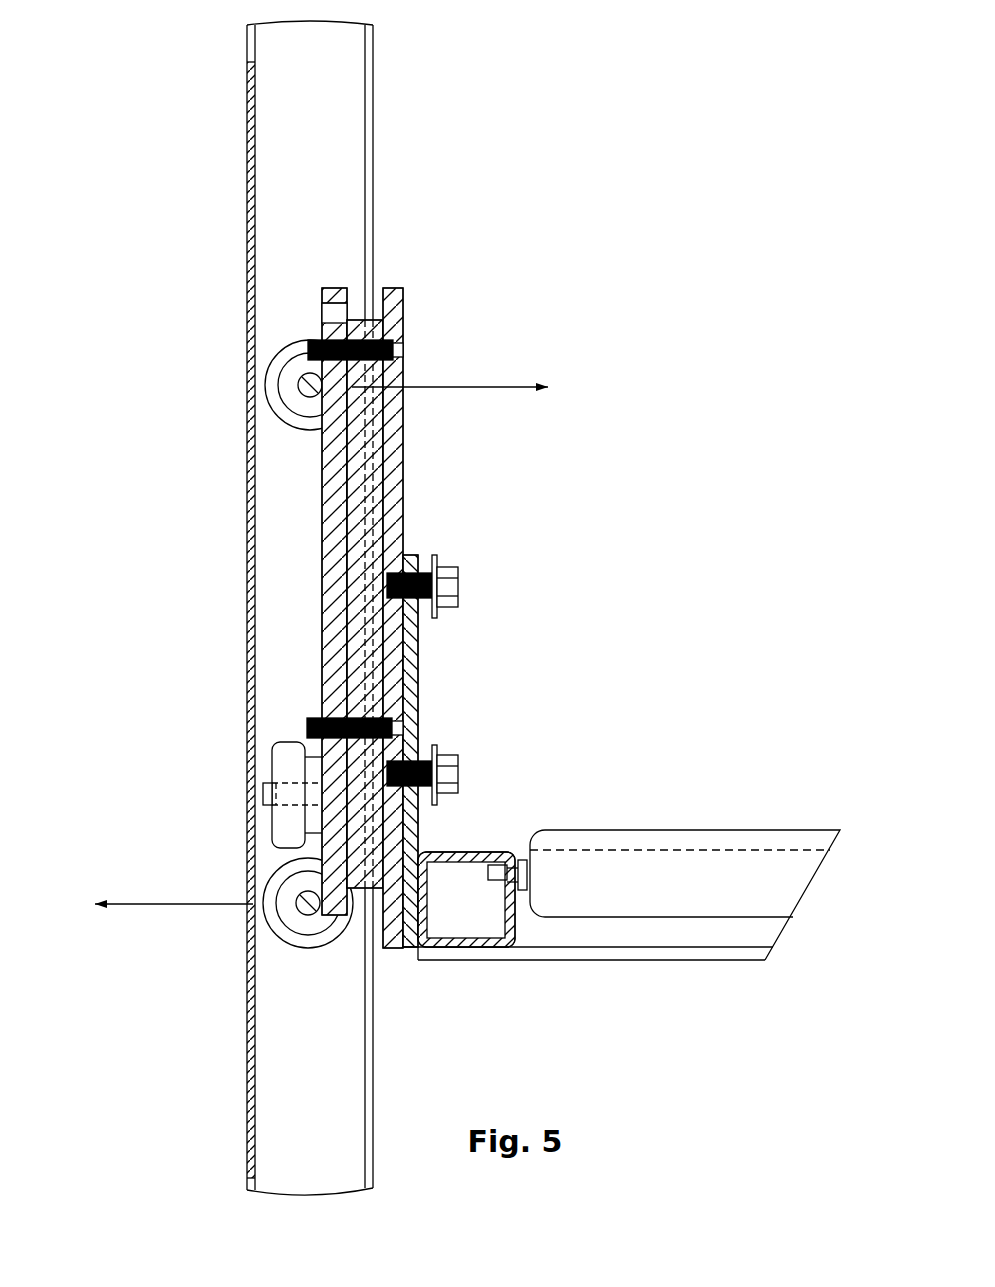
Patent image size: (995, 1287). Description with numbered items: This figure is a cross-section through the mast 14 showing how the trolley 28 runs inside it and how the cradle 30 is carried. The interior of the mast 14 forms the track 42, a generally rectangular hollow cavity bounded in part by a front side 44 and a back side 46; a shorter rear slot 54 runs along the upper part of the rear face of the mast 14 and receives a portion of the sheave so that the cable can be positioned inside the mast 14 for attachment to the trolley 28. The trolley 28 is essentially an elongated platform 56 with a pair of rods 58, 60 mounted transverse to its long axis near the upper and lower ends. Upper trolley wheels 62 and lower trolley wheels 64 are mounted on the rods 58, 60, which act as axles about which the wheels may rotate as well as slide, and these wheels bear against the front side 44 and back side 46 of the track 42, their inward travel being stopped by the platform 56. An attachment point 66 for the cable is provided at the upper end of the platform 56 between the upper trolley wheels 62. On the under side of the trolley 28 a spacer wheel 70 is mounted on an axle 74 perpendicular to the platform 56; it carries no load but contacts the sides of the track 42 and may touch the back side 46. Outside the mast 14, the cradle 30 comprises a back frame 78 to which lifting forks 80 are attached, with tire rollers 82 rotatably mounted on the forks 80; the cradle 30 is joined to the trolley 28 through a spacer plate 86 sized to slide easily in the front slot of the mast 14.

The mast 14 is at (299, 608).
The trolley 28 is at (350, 483).
The cradle 30 is at (588, 809).
The track 42 is at (333, 97).
The front side 44 is at (367, 187).
The back side 46 is at (245, 407).
The rear slot 54 is at (248, 50).
The elongated platform 56 is at (310, 562).
The rod 58 is at (297, 375).
The rod 60 is at (295, 915).
The upper trolley wheels 62 is at (229, 339).
The lower trolley wheels 64 is at (245, 973).
The attachment point 66 is at (338, 302).
The spacer wheel 70 is at (272, 828).
The axle 74 is at (263, 790).
The back frame 78 is at (465, 853).
The lifting forks 80 is at (670, 960).
The tire rollers 82 is at (617, 828).
The spacer plate 86 is at (352, 441).